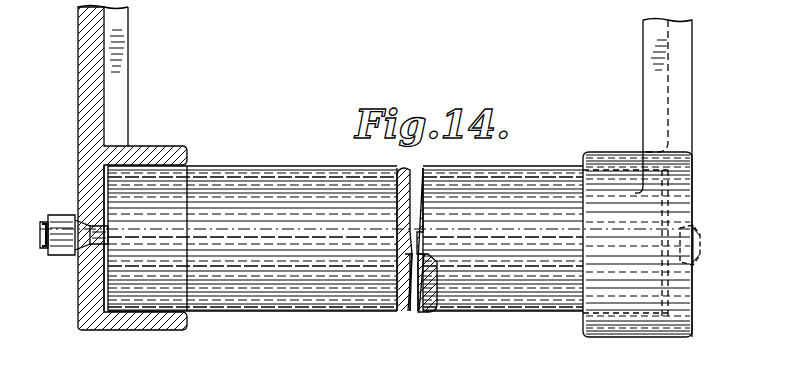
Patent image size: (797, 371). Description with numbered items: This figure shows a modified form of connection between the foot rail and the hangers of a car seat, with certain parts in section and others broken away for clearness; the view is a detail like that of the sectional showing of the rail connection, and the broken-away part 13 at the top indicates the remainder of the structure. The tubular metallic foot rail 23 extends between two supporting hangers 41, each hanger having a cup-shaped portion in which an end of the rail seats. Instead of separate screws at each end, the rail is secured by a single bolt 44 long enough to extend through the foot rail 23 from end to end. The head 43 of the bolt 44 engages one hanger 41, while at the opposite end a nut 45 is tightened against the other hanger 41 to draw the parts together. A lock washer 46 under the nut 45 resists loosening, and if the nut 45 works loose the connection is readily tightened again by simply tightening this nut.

The roller drum 13 is at (370, 168).
The foot rail 23 is at (440, 176).
The hanger member 41 is at (119, 92).
The head 43 is at (704, 240).
The bolt 44 is at (414, 312).
The nut 45 is at (62, 213).
The lock washer 46 is at (74, 258).